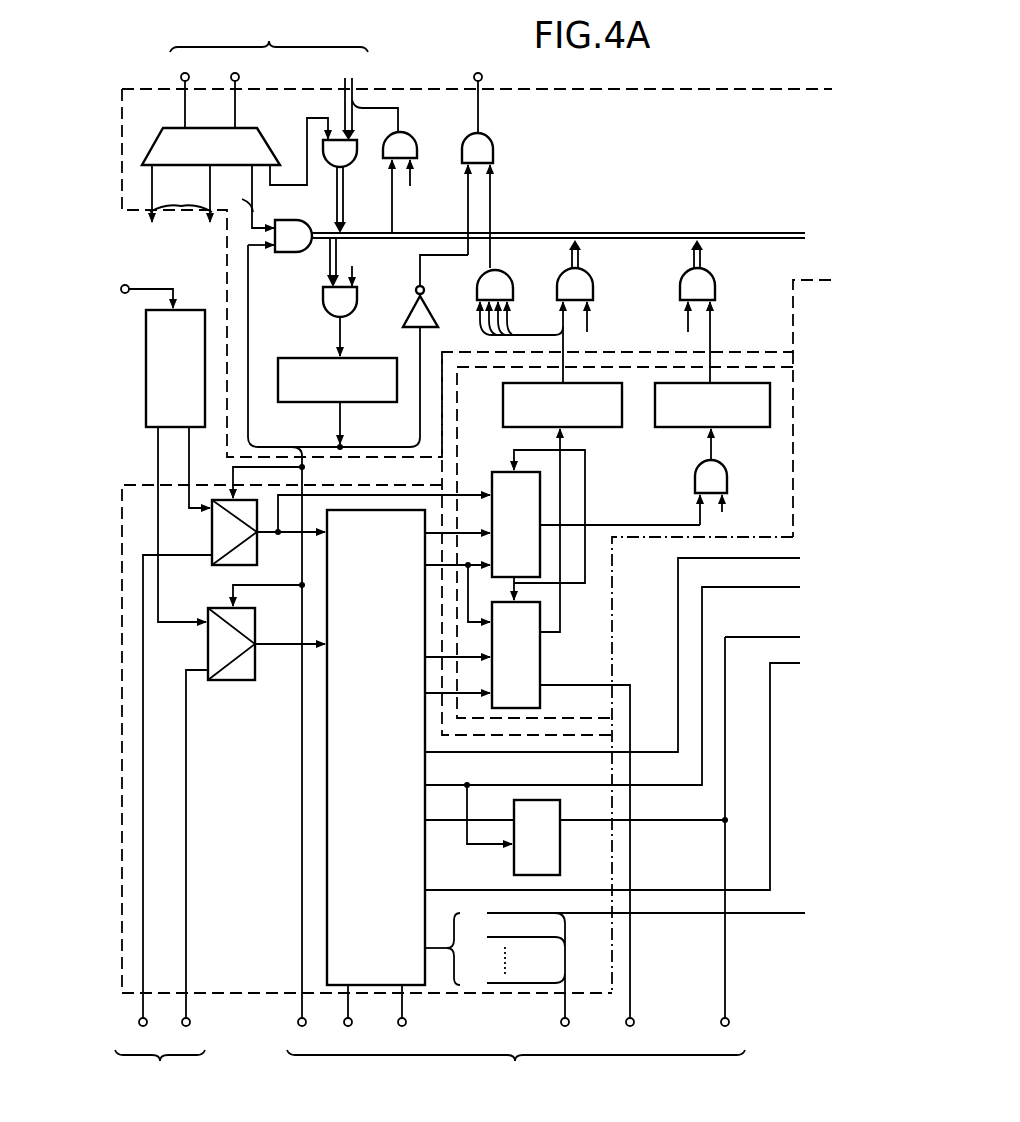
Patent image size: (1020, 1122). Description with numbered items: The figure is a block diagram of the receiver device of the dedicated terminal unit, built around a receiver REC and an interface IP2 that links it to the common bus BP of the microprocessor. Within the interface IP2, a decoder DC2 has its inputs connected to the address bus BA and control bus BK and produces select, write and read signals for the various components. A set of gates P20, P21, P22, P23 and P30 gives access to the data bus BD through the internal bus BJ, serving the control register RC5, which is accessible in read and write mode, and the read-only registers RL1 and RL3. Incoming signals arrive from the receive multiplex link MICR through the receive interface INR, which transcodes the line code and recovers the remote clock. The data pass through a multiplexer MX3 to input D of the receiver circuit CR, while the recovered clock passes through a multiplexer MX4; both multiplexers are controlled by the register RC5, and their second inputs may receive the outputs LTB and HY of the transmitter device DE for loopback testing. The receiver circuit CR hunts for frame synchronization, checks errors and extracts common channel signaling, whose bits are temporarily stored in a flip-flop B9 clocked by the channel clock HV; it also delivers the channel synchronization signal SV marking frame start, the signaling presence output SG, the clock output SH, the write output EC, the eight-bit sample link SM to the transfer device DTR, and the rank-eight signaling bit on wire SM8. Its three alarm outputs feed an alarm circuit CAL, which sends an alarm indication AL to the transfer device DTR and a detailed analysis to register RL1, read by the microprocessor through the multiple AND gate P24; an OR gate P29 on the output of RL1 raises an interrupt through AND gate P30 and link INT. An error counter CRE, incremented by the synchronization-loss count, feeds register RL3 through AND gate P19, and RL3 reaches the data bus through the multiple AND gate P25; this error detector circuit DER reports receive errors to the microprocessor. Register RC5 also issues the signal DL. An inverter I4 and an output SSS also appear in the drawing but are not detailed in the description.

The interface IP2 is at (658, 108).
The common bus BP is at (269, 34).
The address bus BA is at (187, 87).
The control bus BK is at (236, 87).
The data bus BD is at (366, 93).
The interrupt link INT is at (478, 89).
The decoder DC2 is at (186, 135).
The gate P20 is at (356, 186).
The gate P21 is at (411, 137).
The AND gate P30 is at (488, 157).
The gate P23 is at (308, 199).
The internal bus BJ is at (572, 239).
The gate P22 is at (330, 296).
The control register RC5 is at (300, 368).
The inverter I4 is at (410, 316).
The OR gate P29 is at (497, 280).
The multiple AND gate P24 is at (588, 280).
The multiple AND gate P25 is at (714, 280).
The register RL1 is at (523, 408).
The register RL3 is at (682, 412).
The AND gate P19 is at (720, 481).
The error detector circuit DER is at (597, 595).
The error counter CRE is at (502, 484).
The alarm circuit CAL is at (535, 680).
The receive interface INR is at (191, 320).
The receive multiplex link MICR is at (147, 287).
The receiver REC is at (367, 757).
The multiplexer MX3 is at (236, 555).
The multiplexer MX4 is at (226, 672).
The reset signal DL is at (300, 761).
The transmitter device output LTB is at (143, 1036).
The transmitter device output HY is at (186, 1036).
The receiver circuit CR is at (382, 848).
The clock output SH is at (348, 1036).
The write signal output EC is at (402, 1036).
The link SM is at (565, 1036).
The alarm indication AL is at (631, 1036).
The wire SM8 is at (668, 914).
The flip-flop B9 is at (518, 856).
The channel synchronization signal SV is at (633, 650).
The channel clock signal HV is at (633, 681).
The output line SSS is at (778, 840).
The signaling presence output SG is at (633, 771).
The transmitter device DE is at (160, 1070).
The transfer device DTR is at (516, 1070).